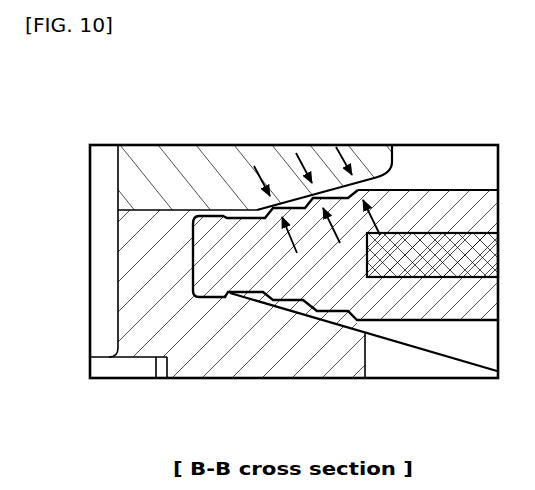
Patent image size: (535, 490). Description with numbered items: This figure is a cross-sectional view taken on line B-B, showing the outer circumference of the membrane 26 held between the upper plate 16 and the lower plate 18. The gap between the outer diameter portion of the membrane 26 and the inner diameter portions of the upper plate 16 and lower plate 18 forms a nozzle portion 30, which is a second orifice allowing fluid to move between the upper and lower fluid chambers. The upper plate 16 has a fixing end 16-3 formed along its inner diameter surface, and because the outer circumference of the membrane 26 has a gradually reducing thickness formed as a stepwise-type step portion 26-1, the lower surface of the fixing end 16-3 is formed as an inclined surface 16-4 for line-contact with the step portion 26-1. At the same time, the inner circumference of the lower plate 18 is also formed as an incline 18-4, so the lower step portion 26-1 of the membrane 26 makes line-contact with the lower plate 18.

The upper plate 16 is at (142, 165).
The fixing end 16-3 is at (386, 160).
The inclined surface 16-4 is at (357, 183).
The lower plate 18 is at (158, 328).
The inclined surface of second housing part 18-4 is at (352, 312).
The membrane 26 is at (448, 196).
The stepwise-type step portion 26-1 is at (305, 192).
The nozzle portion 30 is at (192, 255).